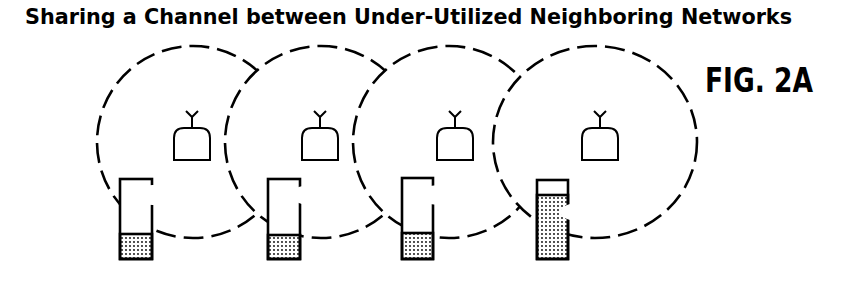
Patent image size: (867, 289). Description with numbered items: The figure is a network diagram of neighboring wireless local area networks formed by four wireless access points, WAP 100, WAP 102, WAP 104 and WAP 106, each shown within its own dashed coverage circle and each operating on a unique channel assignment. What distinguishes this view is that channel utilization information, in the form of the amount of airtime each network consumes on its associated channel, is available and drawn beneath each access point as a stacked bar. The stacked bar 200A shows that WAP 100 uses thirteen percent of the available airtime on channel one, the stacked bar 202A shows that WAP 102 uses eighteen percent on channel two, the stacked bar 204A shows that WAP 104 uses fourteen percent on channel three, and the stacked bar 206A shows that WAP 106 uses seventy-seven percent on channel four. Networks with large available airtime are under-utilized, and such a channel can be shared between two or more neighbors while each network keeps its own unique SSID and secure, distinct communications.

The WAP 100 is at (202, 127).
The WAP 102 is at (330, 127).
The WAP 104 is at (462, 127).
The WAP 106 is at (602, 127).
The stacked bar 200A is at (120, 234).
The stacked bar 202A is at (268, 228).
The stacked bar 204A is at (402, 230).
The stacked bar 206A is at (537, 233).